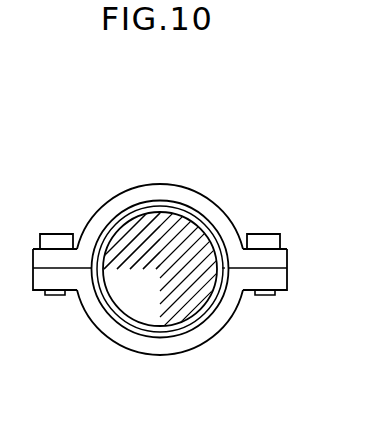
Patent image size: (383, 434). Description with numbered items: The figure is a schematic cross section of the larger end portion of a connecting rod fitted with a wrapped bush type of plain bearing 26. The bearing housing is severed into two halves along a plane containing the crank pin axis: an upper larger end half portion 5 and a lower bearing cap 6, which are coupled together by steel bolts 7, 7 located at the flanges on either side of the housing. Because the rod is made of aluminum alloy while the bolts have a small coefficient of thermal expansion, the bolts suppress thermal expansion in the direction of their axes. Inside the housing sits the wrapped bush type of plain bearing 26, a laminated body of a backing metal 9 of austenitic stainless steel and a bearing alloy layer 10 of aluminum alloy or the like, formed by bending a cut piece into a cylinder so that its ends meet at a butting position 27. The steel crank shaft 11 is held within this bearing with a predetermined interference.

The larger end half portion 5 is at (162, 183).
The bearing cap 6 is at (152, 355).
The steel bolts 7 is at (58, 239).
The backing metal 9 is at (106, 297).
The bearing alloy layer 10 is at (83, 291).
The crank shaft 11 is at (130, 308).
The wrapped bush type of plain bearing 26 is at (193, 339).
The butting position 27 is at (224, 277).